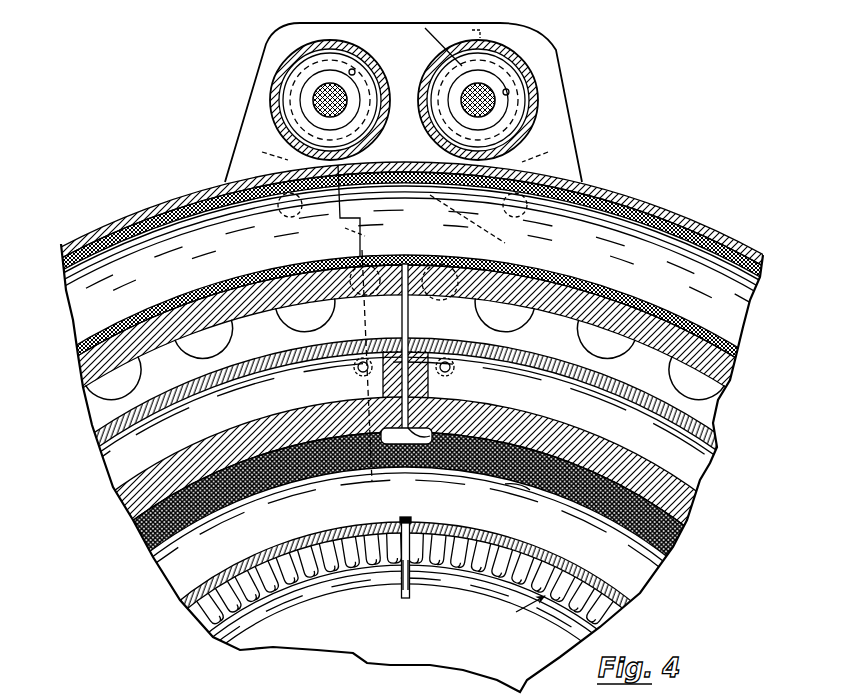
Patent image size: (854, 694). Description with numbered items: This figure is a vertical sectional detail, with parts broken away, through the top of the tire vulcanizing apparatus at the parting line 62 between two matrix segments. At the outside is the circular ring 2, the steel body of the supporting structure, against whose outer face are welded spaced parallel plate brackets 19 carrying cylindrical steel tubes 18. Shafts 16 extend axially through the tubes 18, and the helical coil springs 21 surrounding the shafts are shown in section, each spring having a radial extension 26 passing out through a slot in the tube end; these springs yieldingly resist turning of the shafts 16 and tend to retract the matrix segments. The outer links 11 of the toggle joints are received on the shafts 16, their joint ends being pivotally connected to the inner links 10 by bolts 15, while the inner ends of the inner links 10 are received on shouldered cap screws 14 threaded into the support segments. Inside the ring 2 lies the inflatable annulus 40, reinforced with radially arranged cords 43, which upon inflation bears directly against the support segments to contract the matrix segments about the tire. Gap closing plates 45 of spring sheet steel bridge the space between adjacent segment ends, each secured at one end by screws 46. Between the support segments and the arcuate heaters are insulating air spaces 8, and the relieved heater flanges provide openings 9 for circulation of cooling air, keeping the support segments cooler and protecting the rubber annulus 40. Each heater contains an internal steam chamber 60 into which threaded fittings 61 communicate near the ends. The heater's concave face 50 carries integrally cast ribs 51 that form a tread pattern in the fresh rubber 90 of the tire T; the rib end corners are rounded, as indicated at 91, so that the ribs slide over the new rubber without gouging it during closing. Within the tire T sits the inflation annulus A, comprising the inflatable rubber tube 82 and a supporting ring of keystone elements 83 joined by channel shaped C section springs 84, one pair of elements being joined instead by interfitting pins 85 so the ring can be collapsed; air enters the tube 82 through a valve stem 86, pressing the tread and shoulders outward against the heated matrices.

The circular ring 2 is at (140, 212).
The insulating air spaces 8 is at (250, 330).
The openings 9 is at (150, 378).
The inner links 10 is at (437, 212).
The outer links 11 is at (400, 149).
The shouldered cap screws 14 is at (369, 300).
The studs or bolts 15 is at (545, 236).
The shafts 16 is at (318, 100).
The cylindrical steel tubes 18 is at (272, 88).
The plate brackets 19 is at (556, 118).
The helical coil springs 21 is at (436, 34).
The radial extension 26 is at (484, 26).
The inflatable annulus 40 is at (740, 278).
The cords 43 is at (703, 268).
The gap closing plates 45 is at (263, 270).
The screws 46 is at (438, 262).
The concave faces 50 is at (296, 444).
The ribs 51 is at (402, 425).
The steam chamber 60 is at (405, 412).
The threaded fittings 61 is at (358, 370).
The parting line 62 is at (410, 318).
The inflatable annular rubber tube 82 is at (235, 504).
The keystone elements 83 is at (297, 548).
The C section springs 84 is at (331, 568).
The interfitting pins 85 is at (568, 576).
The valve stem 86 is at (411, 592).
The fresh rubber 90 is at (512, 479).
The rounded end corners 91 is at (428, 434).
The tire T is at (522, 500).
The inflation annulus A is at (518, 615).